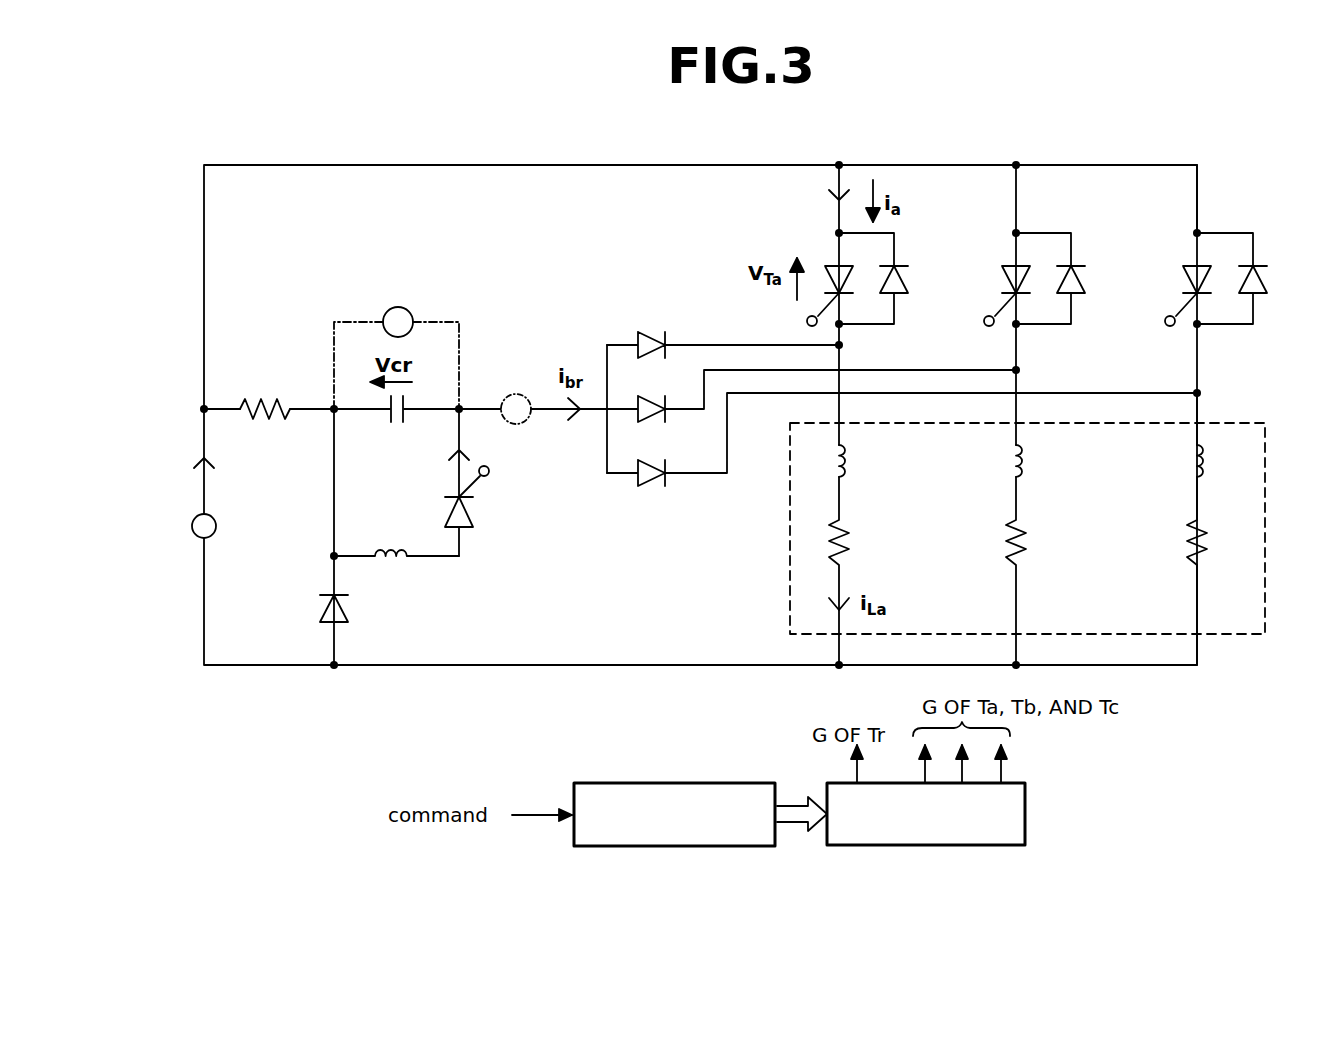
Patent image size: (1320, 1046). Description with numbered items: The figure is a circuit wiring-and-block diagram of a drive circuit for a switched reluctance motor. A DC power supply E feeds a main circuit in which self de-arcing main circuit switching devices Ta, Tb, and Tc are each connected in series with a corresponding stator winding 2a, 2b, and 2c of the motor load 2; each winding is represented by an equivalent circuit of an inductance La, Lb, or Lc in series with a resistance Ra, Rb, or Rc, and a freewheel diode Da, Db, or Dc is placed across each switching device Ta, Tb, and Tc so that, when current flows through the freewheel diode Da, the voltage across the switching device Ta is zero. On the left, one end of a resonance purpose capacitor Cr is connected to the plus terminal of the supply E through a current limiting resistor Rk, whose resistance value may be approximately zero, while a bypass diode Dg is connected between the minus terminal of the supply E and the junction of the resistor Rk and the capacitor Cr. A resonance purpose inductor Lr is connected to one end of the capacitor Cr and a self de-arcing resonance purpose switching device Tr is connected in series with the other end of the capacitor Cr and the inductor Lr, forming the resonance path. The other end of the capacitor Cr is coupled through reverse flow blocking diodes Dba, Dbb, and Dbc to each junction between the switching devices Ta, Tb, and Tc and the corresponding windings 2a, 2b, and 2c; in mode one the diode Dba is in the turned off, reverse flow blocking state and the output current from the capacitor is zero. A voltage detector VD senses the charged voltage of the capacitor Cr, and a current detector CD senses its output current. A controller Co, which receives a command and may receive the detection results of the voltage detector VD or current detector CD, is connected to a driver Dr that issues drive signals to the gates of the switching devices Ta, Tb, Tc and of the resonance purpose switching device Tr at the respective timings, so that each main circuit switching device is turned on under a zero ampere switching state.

The stator windings 2 is at (1267, 457).
The stator winding 2a is at (818, 498).
The stator winding 2b is at (996, 498).
The stator winding 2c is at (1178, 498).
The DC power supply E is at (201, 506).
The current limiting resistor Rk is at (265, 395).
The resonance purpose capacitor Cr is at (388, 424).
The voltage detector VD is at (398, 305).
The current detector CD is at (516, 394).
The resonance purpose switching device Tr is at (474, 482).
The resonance purpose inductor Lr is at (396, 539).
The bypass diode Dg is at (353, 537).
The reverse flow blocking diode Dba is at (723, 332).
The reverse flow blocking diode Dbb is at (811, 396).
The reverse flow blocking diode Dbc is at (902, 439).
The main circuit switching device Ta is at (830, 264).
The freewheel diode Da is at (893, 278).
The main circuit switching device Tb is at (1007, 264).
The freewheel diode Db is at (1071, 278).
The main circuit switching device Tc is at (1188, 264).
The freewheel diode Dc is at (1251, 278).
The inductance La is at (860, 461).
The resistance Ra is at (857, 571).
The inductance Lb is at (1038, 461).
The resistance Rb is at (1034, 571).
The inductance Lc is at (1218, 461).
The resistance Rc is at (1214, 571).
The controller Co is at (676, 846).
The driver Dr is at (925, 845).